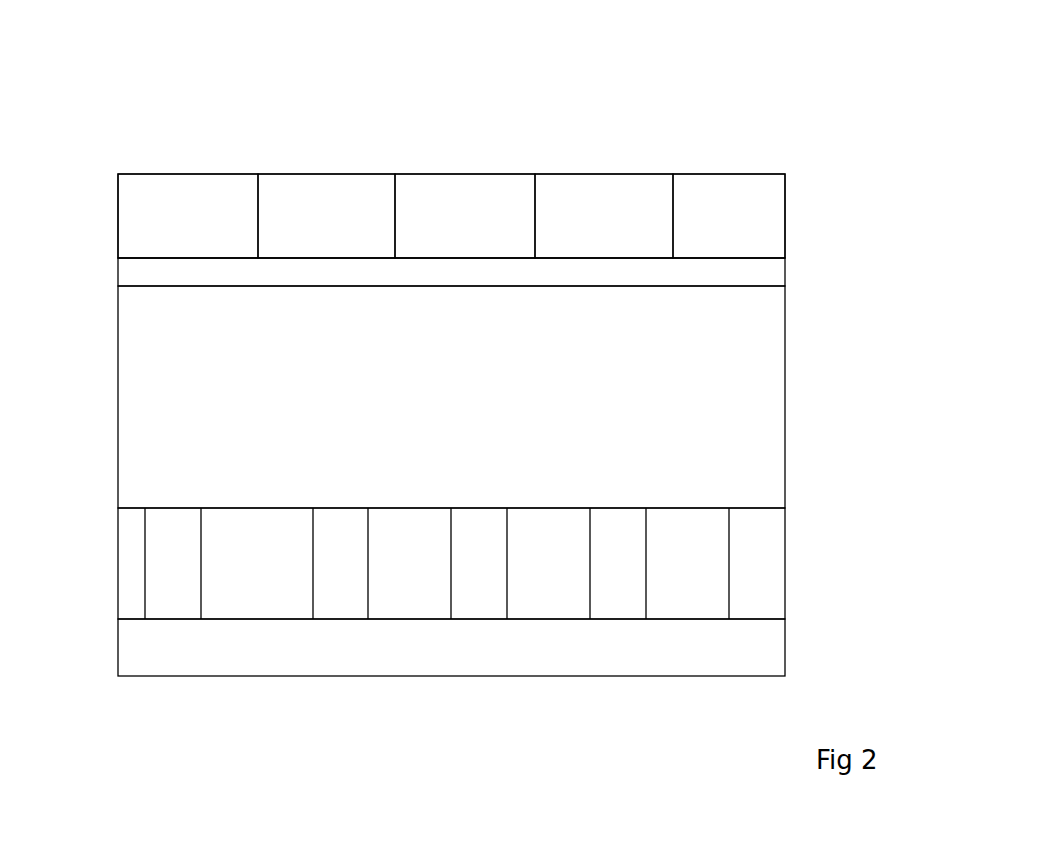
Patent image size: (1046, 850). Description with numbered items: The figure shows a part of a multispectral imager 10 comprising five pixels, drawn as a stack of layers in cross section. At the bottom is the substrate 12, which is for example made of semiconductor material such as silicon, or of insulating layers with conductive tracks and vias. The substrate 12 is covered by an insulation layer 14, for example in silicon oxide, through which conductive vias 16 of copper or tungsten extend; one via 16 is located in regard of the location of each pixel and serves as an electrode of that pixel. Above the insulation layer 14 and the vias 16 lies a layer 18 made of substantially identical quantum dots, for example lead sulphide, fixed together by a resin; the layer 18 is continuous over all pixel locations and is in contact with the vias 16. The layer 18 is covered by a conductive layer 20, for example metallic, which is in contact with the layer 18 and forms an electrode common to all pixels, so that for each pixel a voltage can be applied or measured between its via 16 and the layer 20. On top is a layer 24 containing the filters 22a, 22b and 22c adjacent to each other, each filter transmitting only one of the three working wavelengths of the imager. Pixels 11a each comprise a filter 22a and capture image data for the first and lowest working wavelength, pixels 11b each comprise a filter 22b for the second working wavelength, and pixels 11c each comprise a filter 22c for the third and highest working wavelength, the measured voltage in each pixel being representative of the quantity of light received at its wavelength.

The multispectral imager 10 is at (848, 86).
The pixels for wavelength L1 11a is at (496, 153).
The pixels for wavelength L2 11b is at (214, 153).
The pixels for wavelength L3 11c is at (360, 153).
The substrate 12 is at (130, 652).
The insulation layer 14 is at (133, 558).
The conductive vias 16 is at (755, 555).
The quantum dot layer 18 is at (755, 418).
The conductive layer 20 is at (755, 272).
The filters for wavelength L1 22a is at (452, 188).
The filters for wavelength L2 22b is at (153, 188).
The filters for wavelength L3 22c is at (307, 188).
The filter layer 24 is at (108, 214).